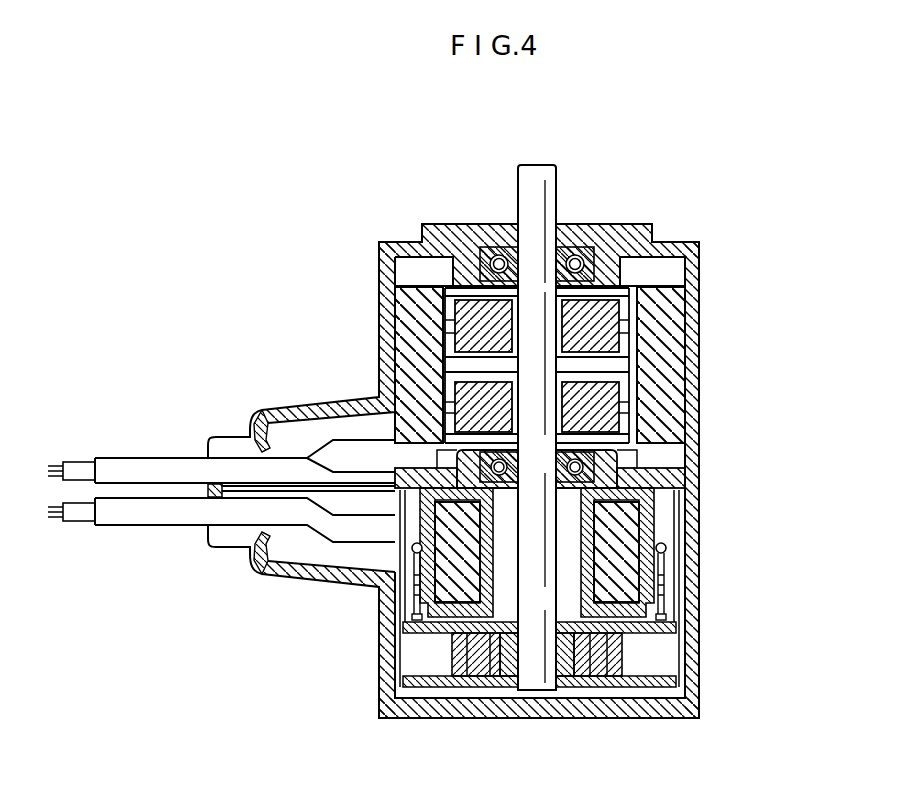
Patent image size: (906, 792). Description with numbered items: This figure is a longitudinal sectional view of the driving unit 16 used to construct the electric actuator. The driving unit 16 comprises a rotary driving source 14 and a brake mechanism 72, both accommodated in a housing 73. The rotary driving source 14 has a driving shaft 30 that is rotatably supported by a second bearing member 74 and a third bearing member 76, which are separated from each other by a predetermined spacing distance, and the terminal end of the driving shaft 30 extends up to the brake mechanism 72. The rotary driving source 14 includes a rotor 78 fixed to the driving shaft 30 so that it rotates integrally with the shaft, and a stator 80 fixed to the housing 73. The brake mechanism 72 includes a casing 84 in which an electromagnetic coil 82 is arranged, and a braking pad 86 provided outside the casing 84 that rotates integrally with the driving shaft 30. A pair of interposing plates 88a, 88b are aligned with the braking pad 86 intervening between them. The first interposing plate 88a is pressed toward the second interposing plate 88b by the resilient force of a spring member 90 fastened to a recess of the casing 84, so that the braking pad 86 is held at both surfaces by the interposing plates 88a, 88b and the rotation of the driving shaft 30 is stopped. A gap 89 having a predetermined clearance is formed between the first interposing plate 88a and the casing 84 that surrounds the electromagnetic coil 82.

The driving unit 16 is at (692, 165).
The driving shaft 30 is at (545, 196).
The second bearing member 74 is at (600, 258).
The rotary driving source 14 is at (658, 347).
The rotor 78 is at (493, 334).
The stator 80 is at (420, 362).
The housing 73 is at (690, 400).
The third bearing member 76 is at (598, 470).
The brake mechanism 72 is at (680, 508).
The electromagnetic coil 82 is at (627, 530).
The spring member 90 is at (665, 608).
The first interposing plate 88a is at (678, 627).
The braking pad 86 is at (640, 655).
The second interposing plate 88b is at (678, 683).
The casing 84 is at (418, 525).
The gap 89 is at (463, 678).